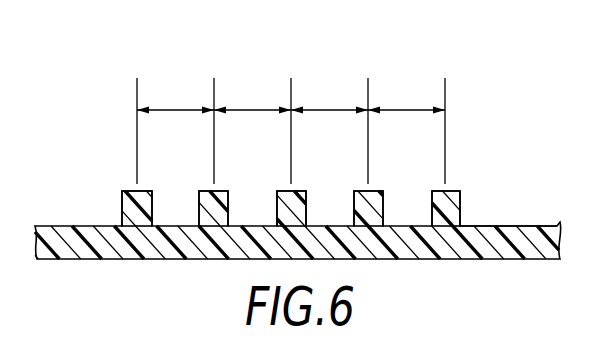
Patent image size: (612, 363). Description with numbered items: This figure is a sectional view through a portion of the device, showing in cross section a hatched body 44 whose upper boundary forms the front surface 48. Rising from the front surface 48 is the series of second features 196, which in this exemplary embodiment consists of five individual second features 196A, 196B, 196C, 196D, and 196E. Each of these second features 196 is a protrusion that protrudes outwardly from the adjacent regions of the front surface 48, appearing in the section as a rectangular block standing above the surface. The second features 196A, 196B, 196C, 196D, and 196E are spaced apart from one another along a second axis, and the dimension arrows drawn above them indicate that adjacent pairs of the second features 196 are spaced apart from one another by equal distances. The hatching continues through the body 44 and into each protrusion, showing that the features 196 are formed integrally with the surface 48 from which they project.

The substrate 44 is at (517, 225).
The front surface 48 is at (488, 225).
The series of second features 196 is at (252, 127).
The second feature 196A is at (122, 204).
The second feature 196B is at (199, 197).
The second feature 196C is at (277, 198).
The second feature 196D is at (353, 208).
The second feature 196E is at (432, 198).